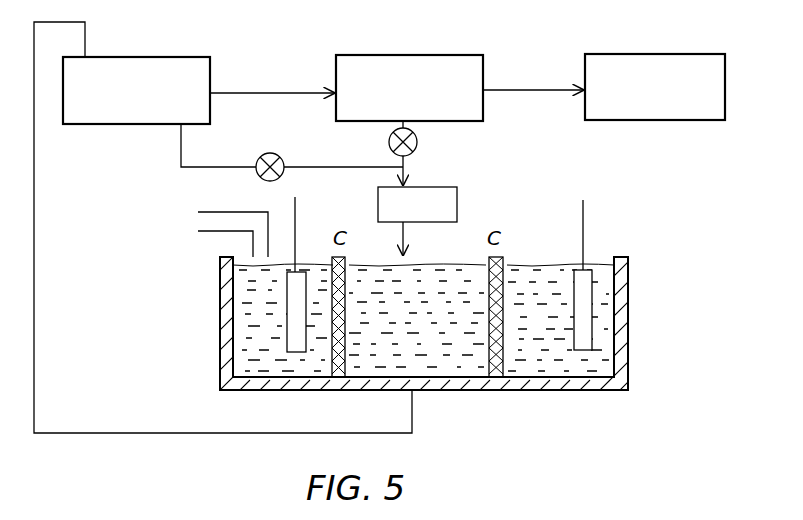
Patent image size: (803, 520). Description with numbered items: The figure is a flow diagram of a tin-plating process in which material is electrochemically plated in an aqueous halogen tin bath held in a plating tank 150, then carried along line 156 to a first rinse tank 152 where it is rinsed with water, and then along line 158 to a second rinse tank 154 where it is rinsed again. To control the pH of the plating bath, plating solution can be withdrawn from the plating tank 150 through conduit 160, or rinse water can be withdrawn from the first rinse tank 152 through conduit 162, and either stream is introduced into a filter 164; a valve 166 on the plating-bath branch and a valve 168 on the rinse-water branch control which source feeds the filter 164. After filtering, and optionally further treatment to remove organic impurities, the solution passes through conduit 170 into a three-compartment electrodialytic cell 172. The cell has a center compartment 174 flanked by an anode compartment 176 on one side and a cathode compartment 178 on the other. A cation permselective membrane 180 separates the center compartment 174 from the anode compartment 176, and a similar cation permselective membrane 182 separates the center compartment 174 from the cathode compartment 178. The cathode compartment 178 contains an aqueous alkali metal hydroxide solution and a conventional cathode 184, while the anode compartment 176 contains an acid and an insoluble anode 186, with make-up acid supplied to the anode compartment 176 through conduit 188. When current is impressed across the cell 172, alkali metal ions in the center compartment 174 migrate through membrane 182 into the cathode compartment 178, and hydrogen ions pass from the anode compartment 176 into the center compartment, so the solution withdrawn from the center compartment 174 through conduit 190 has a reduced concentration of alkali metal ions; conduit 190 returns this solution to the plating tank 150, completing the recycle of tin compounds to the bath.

The plating tank 150 is at (143, 57).
The first rinse tank 152 is at (410, 46).
The second rinse tank 154 is at (642, 45).
The line 156 is at (270, 90).
The line 158 is at (543, 88).
The conduit 160 is at (213, 167).
The conduit 162 is at (406, 166).
The filter 164 is at (457, 200).
The valve 166 is at (279, 153).
The valve 168 is at (417, 140).
The conduit 170 is at (406, 238).
The electrodialytic cell 172 is at (624, 226).
The center compartment 174 is at (414, 306).
The anode compartment 176 is at (274, 306).
The cathode compartment 178 is at (546, 304).
The cation permselective membrane 180 is at (346, 348).
The cation permselective membrane 182 is at (536, 333).
The cathode 184 is at (591, 301).
The insoluble anode 186 is at (283, 337).
The conduit 188 is at (224, 212).
The conduit 190 is at (37, 346).